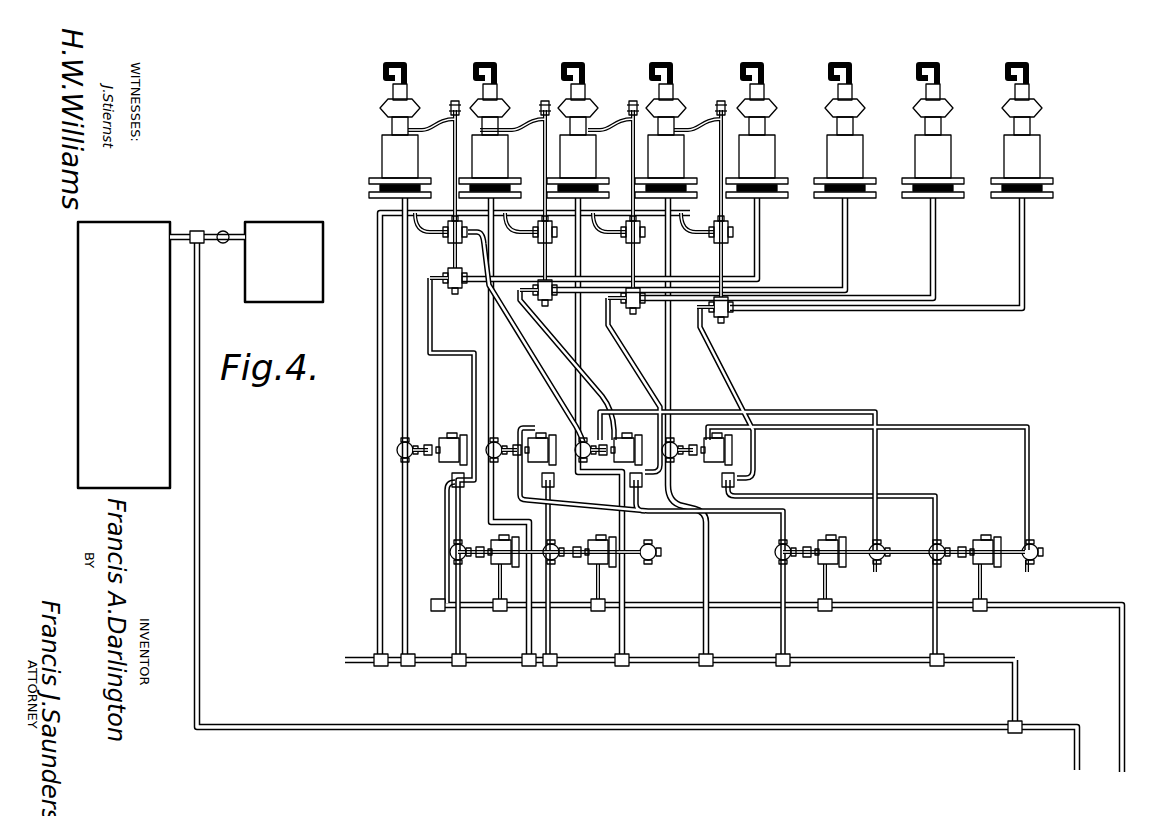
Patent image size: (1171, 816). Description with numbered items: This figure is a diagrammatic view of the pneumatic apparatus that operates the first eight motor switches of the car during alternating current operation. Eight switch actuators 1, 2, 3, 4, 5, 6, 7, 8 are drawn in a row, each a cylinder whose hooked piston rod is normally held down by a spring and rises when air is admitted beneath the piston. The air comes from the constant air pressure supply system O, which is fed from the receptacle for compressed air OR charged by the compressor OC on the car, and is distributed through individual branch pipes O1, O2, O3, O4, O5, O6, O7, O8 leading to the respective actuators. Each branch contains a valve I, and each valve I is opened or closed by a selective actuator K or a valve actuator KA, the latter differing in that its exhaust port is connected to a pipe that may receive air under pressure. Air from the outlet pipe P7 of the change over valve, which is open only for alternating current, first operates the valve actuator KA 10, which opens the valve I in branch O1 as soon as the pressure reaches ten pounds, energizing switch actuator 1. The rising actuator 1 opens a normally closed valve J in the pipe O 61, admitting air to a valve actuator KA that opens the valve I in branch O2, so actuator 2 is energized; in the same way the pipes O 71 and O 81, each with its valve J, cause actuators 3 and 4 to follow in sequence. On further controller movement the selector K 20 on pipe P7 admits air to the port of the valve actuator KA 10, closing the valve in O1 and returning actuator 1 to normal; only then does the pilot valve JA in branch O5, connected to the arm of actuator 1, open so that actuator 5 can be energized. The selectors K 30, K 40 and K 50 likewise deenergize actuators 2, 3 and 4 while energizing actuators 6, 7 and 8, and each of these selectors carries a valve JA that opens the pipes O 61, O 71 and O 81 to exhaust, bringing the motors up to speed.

The switch actuator 1 is at (400, 131).
The switch actuator 2 is at (490, 131).
The switch actuator 3 is at (578, 131).
The switch actuator 4 is at (666, 131).
The switch actuator 5 is at (757, 131).
The switch actuator 6 is at (845, 131).
The switch actuator 7 is at (933, 131).
The switch actuator 8 is at (1022, 131).
The receptacle for compressed air OR is at (90, 354).
The compressor OC is at (284, 262).
The constant air pressure supply system O is at (377, 303).
The branch pipe O1 is at (409, 629).
The branch pipe O2 is at (528, 647).
The branch pipe O3 is at (620, 648).
The branch pipe O4 is at (705, 640).
The branch pipe O5 is at (760, 245).
The branch pipe O6 is at (848, 245).
The branch pipe O7 is at (936, 246).
The branch pipe O8 is at (1025, 246).
The pipe O61 61 is at (516, 333).
The pipe O71 71 is at (600, 262).
The pipe O81 81 is at (655, 248).
The valve J is at (447, 240).
The pilot valve JA is at (457, 294).
The valve I is at (396, 452).
The valve actuator KA is at (447, 436).
The selective actuator K is at (978, 455).
The actuator KA10 10 is at (450, 439).
The selector K20 20 is at (490, 561).
The selector K30 30 is at (590, 561).
The selector K40 40 is at (831, 499).
The selector K50 50 is at (987, 493).
The outlet pipe P7 is at (1132, 768).